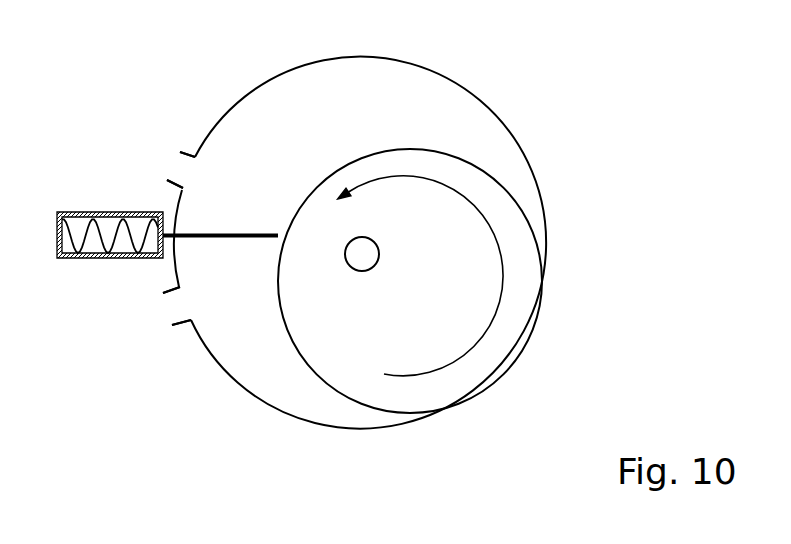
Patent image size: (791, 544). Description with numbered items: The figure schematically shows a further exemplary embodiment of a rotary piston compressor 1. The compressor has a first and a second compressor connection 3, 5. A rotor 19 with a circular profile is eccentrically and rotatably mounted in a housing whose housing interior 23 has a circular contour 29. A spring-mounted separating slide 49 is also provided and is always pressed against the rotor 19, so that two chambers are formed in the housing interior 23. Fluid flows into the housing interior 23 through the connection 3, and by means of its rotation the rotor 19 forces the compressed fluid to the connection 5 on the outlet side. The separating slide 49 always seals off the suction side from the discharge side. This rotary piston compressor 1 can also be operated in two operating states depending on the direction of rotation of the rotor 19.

The rotary piston compressor 1 is at (550, 88).
The circular contour 29 is at (515, 142).
The housing interior 23 is at (507, 172).
The rotor 19 is at (502, 345).
The separating slide 49 is at (232, 238).
The second compressor connection 5 is at (183, 170).
The first compressor connection 3 is at (178, 305).